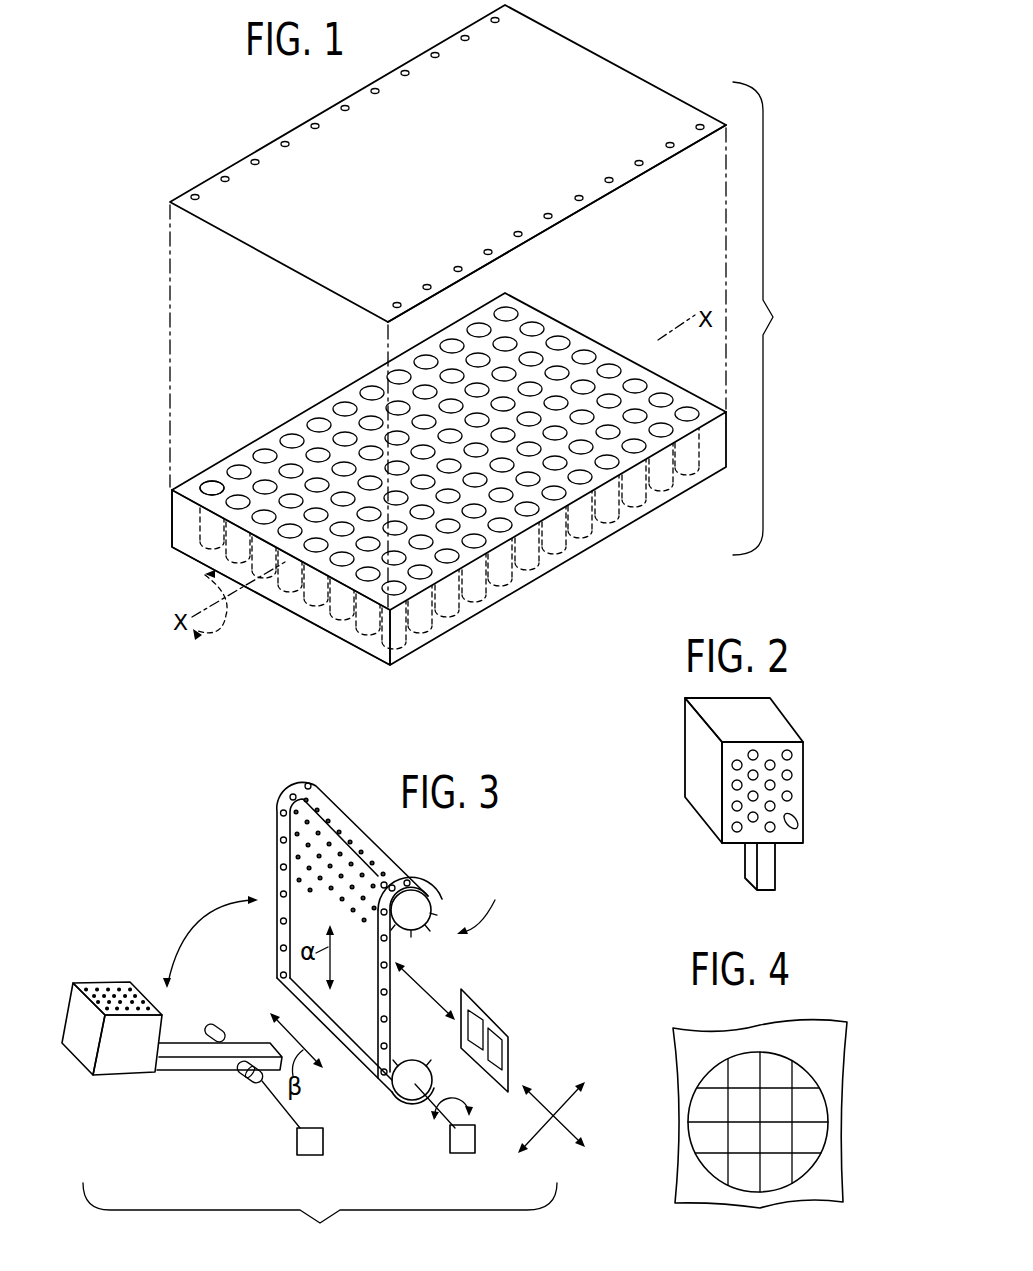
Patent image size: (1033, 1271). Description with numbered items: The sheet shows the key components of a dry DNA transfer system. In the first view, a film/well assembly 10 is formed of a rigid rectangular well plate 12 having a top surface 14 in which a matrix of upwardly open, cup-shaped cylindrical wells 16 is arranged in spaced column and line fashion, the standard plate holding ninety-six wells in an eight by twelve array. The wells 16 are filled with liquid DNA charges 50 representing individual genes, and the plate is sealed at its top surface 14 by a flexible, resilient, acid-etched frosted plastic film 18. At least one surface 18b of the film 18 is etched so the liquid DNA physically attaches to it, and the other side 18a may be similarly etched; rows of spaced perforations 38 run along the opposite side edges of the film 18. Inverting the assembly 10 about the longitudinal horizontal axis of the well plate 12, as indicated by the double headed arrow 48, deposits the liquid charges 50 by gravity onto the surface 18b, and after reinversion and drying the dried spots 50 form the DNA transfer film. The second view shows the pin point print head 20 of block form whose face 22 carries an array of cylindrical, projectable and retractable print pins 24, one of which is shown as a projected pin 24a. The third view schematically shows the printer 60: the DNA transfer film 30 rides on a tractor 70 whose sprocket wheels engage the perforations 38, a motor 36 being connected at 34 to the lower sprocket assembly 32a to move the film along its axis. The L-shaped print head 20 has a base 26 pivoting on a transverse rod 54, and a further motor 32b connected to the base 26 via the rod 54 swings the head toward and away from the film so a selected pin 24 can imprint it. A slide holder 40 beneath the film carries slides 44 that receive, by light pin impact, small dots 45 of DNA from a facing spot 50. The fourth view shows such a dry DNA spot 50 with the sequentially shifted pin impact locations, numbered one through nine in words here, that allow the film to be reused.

In FIG. 1, the film/well assembly 10 is at (773, 318).
In FIG. 1, the well plate 12 is at (686, 484).
In FIG. 1, the top surface 14 is at (245, 450).
In FIG. 1, the wells 16 is at (212, 482).
In FIG. 1, the plastic film 18 is at (660, 97).
In FIG. 1, the other side of plastic film 18a is at (283, 133).
In FIG. 1, the etched surface of plastic film 18b is at (655, 170).
In FIG. 1, the perforations 38 is at (608, 187).
In FIG. 3, the perforations 38 is at (378, 1022).
In FIG. 1, the double headed arrow 48 is at (230, 622).
In FIG. 1, the DNA spot 50 is at (423, 615).
In FIG. 3, the DNA spot 50 is at (291, 829).
In FIG. 4, the DNA spot 50 is at (828, 1103).
In FIG. 3, the print head 20 is at (77, 1025).
In FIG. 3, the face of print head 22 is at (103, 984).
In FIG. 2, the print pins 24 is at (808, 762).
In FIG. 2, the projected pin 24a is at (793, 821).
In FIG. 3, the base of print head 26 is at (240, 1043).
In FIG. 3, the DNA transfer film 30 is at (258, 812).
In FIG. 3, the lower sprocket assembly 32a is at (410, 1088).
In FIG. 3, the further motor 32b is at (418, 915).
In FIG. 3, the connection 34 is at (432, 1108).
In FIG. 3, the motor 36 is at (465, 1155).
In FIG. 3, the slide holder 40 is at (468, 998).
In FIG. 3, the slides 44 is at (497, 1057).
In FIG. 3, the dot 45 is at (495, 1050).
In FIG. 3, the transverse shaft or rod 54 is at (246, 1078).
In FIG. 3, the printer 60 is at (320, 1219).
In FIG. 3, the tractor 70 is at (491, 911).